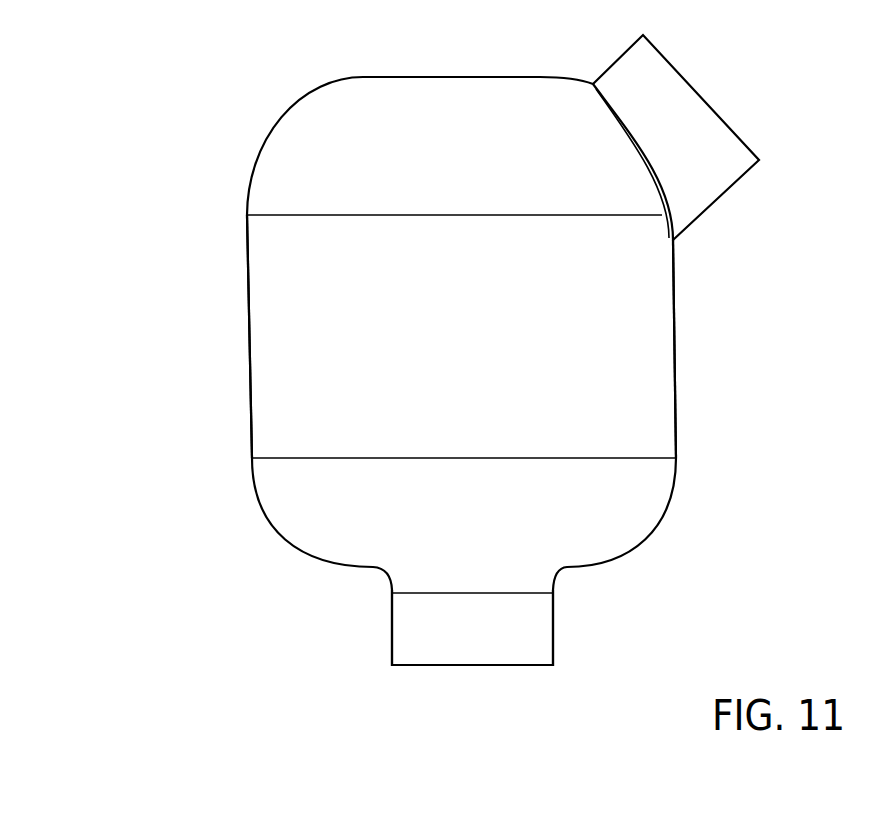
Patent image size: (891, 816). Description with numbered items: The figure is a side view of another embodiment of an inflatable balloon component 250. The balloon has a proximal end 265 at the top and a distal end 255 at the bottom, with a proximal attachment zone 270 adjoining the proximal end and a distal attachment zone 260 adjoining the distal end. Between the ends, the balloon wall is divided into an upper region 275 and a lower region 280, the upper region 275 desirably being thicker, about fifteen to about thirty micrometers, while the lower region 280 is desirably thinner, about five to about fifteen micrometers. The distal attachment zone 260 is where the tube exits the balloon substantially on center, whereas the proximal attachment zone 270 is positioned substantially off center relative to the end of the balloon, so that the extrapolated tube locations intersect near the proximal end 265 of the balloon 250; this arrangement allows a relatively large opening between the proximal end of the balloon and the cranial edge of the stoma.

The inflatable balloon component 250 is at (772, 434).
The distal end 255 is at (489, 552).
The distal attachment zone 260 is at (542, 623).
The proximal end 265 is at (482, 123).
The proximal attachment zone 270 is at (701, 195).
The upper region 275 is at (660, 338).
The lower region 280 is at (260, 317).